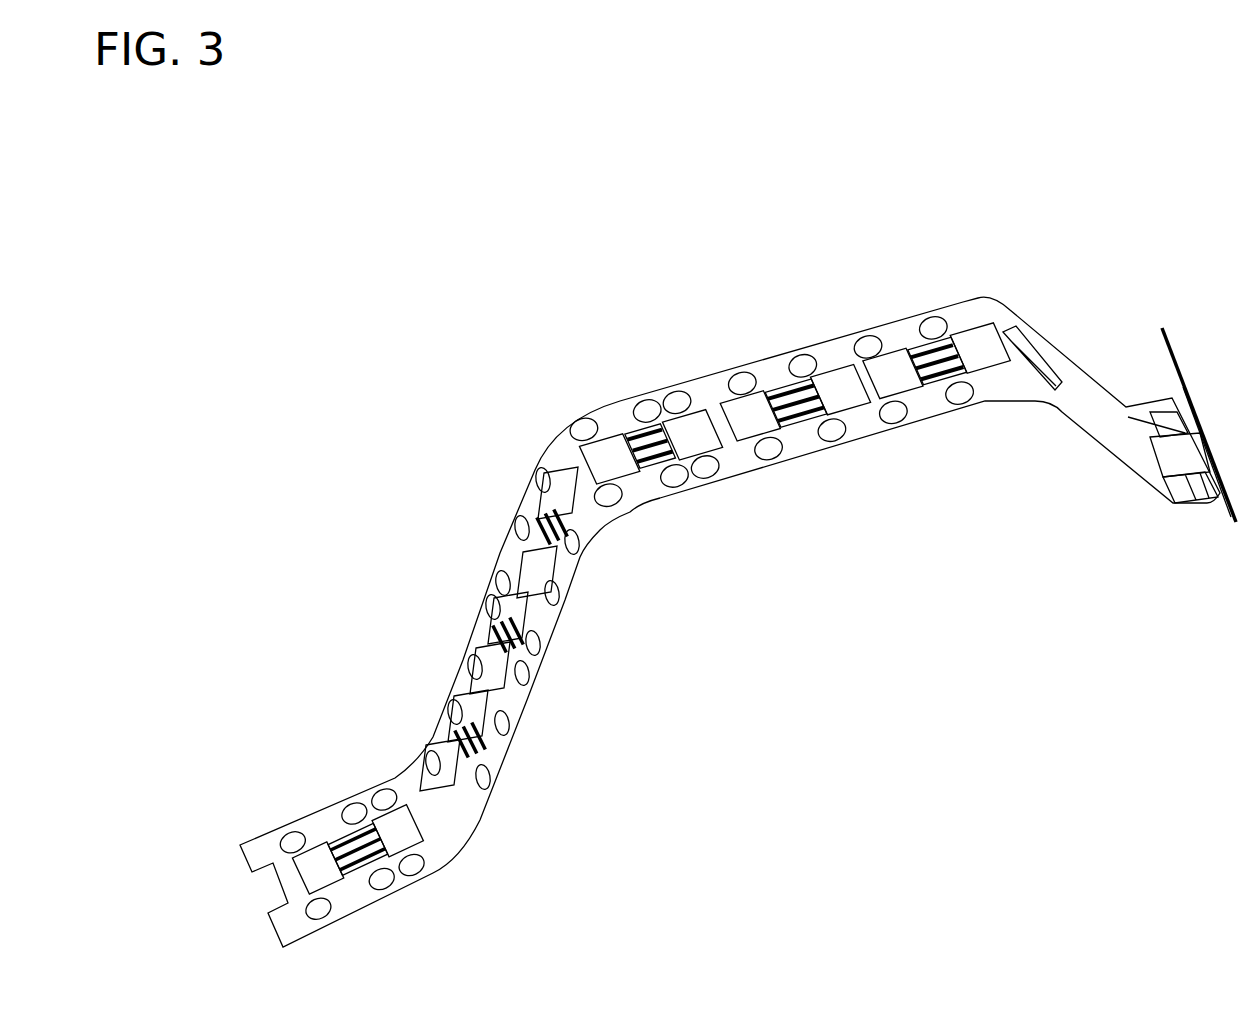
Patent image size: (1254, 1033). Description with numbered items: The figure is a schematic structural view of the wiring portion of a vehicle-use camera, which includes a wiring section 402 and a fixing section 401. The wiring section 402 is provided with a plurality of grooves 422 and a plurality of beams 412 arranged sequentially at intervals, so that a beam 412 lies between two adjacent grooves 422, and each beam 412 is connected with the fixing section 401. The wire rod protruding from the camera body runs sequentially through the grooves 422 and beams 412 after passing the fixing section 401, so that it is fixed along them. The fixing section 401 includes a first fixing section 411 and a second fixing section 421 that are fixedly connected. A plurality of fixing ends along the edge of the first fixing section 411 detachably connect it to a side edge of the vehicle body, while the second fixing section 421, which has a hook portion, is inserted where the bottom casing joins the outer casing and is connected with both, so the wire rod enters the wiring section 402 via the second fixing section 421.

The fixing section 401 is at (1073, 195).
The wiring section 402 is at (627, 195).
The first fixing section 411 is at (905, 330).
The second fixing section 421 is at (1234, 522).
The beam 412 is at (582, 478).
The groove 422 is at (655, 437).